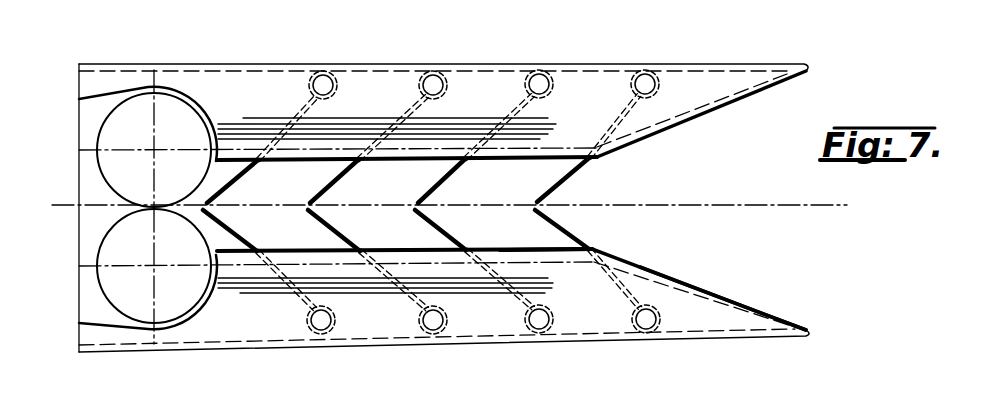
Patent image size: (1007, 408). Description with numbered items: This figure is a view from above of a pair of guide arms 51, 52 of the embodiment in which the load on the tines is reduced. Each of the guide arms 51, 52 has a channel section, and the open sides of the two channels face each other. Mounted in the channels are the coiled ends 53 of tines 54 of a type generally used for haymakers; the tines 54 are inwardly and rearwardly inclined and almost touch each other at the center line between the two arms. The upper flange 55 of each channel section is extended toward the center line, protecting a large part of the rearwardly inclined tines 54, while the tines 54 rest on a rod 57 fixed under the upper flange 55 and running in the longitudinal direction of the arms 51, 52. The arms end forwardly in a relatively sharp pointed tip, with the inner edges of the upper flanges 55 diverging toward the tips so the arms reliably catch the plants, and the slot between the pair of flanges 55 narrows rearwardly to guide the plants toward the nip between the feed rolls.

The guide arm 51 is at (365, 308).
The guide arm 52 is at (358, 82).
The coiled ends 53 is at (652, 320).
The tines 54 is at (567, 227).
The upper flange 55 is at (655, 268).
The rod 57 is at (409, 251).